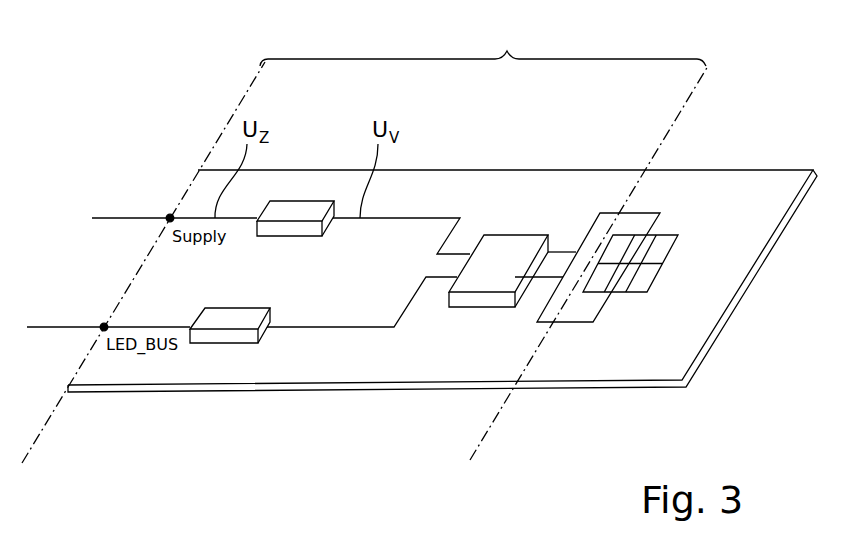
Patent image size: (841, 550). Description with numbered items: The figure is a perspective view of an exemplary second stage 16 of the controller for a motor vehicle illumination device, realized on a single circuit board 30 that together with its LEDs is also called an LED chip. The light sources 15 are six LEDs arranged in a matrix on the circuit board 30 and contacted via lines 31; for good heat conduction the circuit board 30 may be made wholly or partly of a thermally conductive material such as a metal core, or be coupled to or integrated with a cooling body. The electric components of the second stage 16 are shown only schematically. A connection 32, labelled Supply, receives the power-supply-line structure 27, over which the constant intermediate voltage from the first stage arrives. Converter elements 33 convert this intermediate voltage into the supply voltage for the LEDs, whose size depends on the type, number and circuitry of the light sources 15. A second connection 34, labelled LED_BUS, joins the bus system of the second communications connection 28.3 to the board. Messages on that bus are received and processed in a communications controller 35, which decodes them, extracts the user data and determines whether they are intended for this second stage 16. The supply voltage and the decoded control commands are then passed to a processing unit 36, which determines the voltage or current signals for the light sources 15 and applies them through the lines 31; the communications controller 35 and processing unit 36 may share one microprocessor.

The second stage 16 is at (483, 48).
The power-supply-line structure 27 is at (134, 218).
The connection 32 is at (170, 216).
The second communications connection 28.3 is at (67, 325).
The connection 34 is at (104, 325).
The converter elements 33 is at (295, 212).
The communications controller 35 is at (236, 322).
The processing unit 36 is at (482, 278).
The lines 31 is at (599, 312).
The light sources 15 is at (667, 278).
The circuit board 30 is at (663, 357).